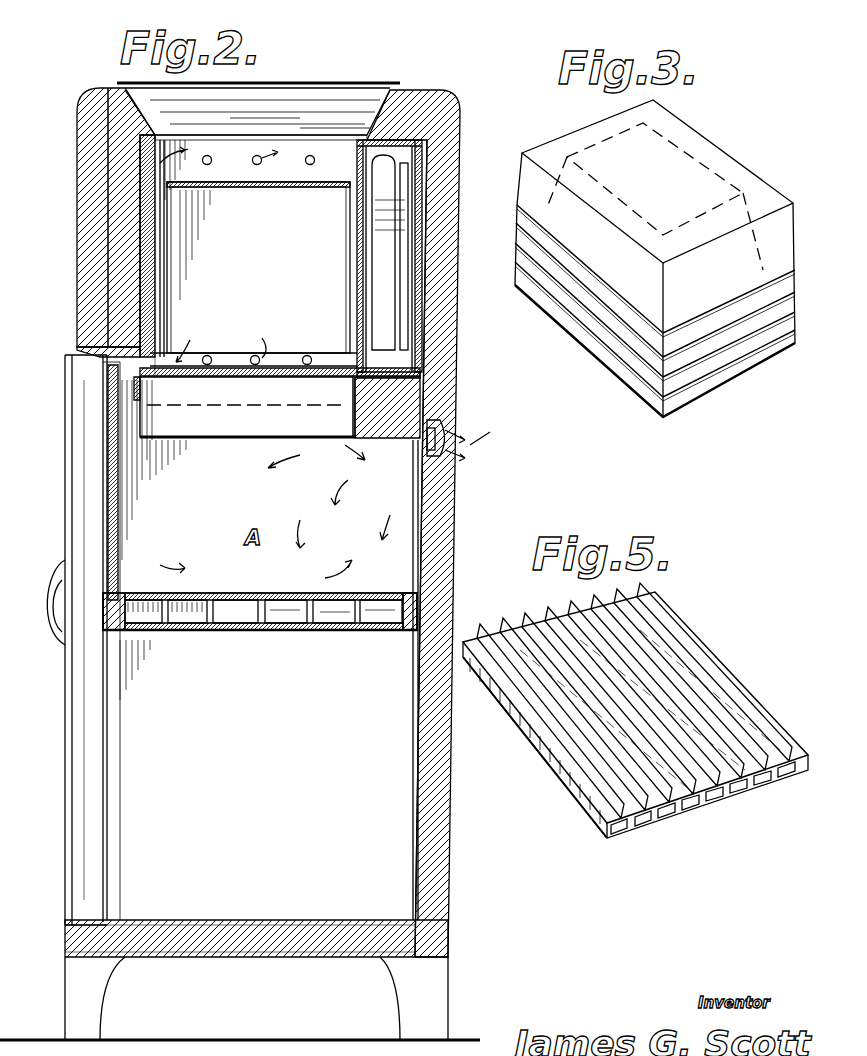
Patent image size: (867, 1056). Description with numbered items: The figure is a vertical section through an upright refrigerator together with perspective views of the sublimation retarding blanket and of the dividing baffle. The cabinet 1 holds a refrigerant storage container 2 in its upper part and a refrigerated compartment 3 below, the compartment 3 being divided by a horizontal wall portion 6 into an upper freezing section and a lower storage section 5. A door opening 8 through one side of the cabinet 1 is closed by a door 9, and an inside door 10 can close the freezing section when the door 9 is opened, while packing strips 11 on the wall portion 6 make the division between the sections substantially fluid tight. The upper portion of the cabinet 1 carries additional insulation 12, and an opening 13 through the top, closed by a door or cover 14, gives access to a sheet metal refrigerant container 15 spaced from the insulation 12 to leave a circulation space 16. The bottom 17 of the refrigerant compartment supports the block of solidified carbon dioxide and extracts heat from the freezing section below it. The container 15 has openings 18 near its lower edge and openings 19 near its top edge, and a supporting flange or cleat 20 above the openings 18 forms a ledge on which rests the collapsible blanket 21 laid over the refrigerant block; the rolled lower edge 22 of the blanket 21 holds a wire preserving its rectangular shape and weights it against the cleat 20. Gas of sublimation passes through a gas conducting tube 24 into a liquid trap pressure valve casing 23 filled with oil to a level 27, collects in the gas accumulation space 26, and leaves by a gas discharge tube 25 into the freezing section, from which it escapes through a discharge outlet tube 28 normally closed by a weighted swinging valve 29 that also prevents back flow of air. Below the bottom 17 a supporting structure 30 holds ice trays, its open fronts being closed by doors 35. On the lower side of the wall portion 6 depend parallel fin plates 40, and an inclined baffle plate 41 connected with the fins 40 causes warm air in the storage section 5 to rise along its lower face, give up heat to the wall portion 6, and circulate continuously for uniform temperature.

In FIG. 2, the cabinet 1 is at (290, 950).
In FIG. 2, the refrigerant storage container 2 is at (349, 161).
In FIG. 2, the refrigerated compartment 3 is at (185, 930).
In FIG. 2, the lower storage section 5 is at (269, 680).
In FIG. 2, the wall portion 6 is at (297, 596).
In FIG. 5, the wall portion 6 is at (720, 680).
In FIG. 2, the door opening 8 is at (90, 328).
In FIG. 2, the door 9 is at (82, 508).
In FIG. 2, the inside door 10 is at (116, 518).
In FIG. 2, the packing strips 11 is at (410, 632).
In FIG. 2, the insulation 12 is at (125, 178).
In FIG. 2, the opening 13 is at (395, 108).
In FIG. 2, the door or cover 14 is at (287, 95).
In FIG. 2, the refrigerant container 15 is at (155, 230).
In FIG. 2, the circulation space 16 is at (150, 266).
In FIG. 2, the bottom 17 is at (262, 366).
In FIG. 2, the openings 18 is at (205, 356).
In FIG. 2, the openings 19 is at (237, 160).
In FIG. 2, the supporting flange or cleat 20 is at (283, 358).
In FIG. 2, the blanket 21 is at (276, 183).
In FIG. 3, the blanket 21 is at (632, 360).
In FIG. 3, the lower edge 22 is at (733, 378).
In FIG. 2, the liquid trap pressure valve casing 23 is at (422, 245).
In FIG. 2, the gas conducting tube 24 is at (350, 253).
In FIG. 2, the gas discharge tube 25 is at (392, 438).
In FIG. 2, the gas accumulation space 26 is at (405, 150).
In FIG. 2, the liquid level 27 is at (410, 202).
In FIG. 2, the discharge outlet tube 28 is at (412, 460).
In FIG. 2, the weighted swinging valve 29 is at (448, 424).
In FIG. 2, the supporting structure 30 is at (252, 440).
In FIG. 2, the doors 35 is at (138, 412).
In FIG. 2, the fin plates 40 is at (330, 630).
In FIG. 5, the fin plates 40 is at (748, 770).
In FIG. 2, the inclined baffle plate 41 is at (248, 630).
In FIG. 5, the inclined baffle plate 41 is at (655, 828).